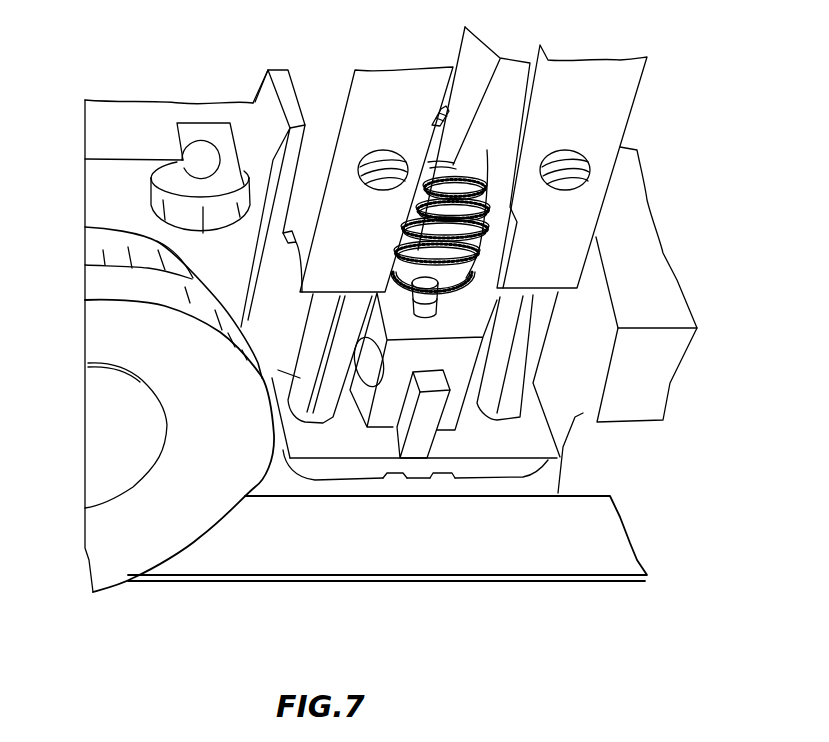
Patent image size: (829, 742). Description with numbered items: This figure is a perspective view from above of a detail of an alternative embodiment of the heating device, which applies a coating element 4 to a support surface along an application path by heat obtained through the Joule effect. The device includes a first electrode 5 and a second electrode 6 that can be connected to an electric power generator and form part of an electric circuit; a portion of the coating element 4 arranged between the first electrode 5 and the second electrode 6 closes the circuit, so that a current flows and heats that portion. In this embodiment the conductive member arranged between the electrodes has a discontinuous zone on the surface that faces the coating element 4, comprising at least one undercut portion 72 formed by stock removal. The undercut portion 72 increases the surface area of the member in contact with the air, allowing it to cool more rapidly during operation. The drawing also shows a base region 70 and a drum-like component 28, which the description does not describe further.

The first electrode 5 is at (320, 330).
The second electrode 6 is at (548, 307).
The base 70 is at (576, 412).
The undercut portion 72 is at (447, 478).
The coating element 4 is at (603, 538).
The drum 28 is at (117, 530).